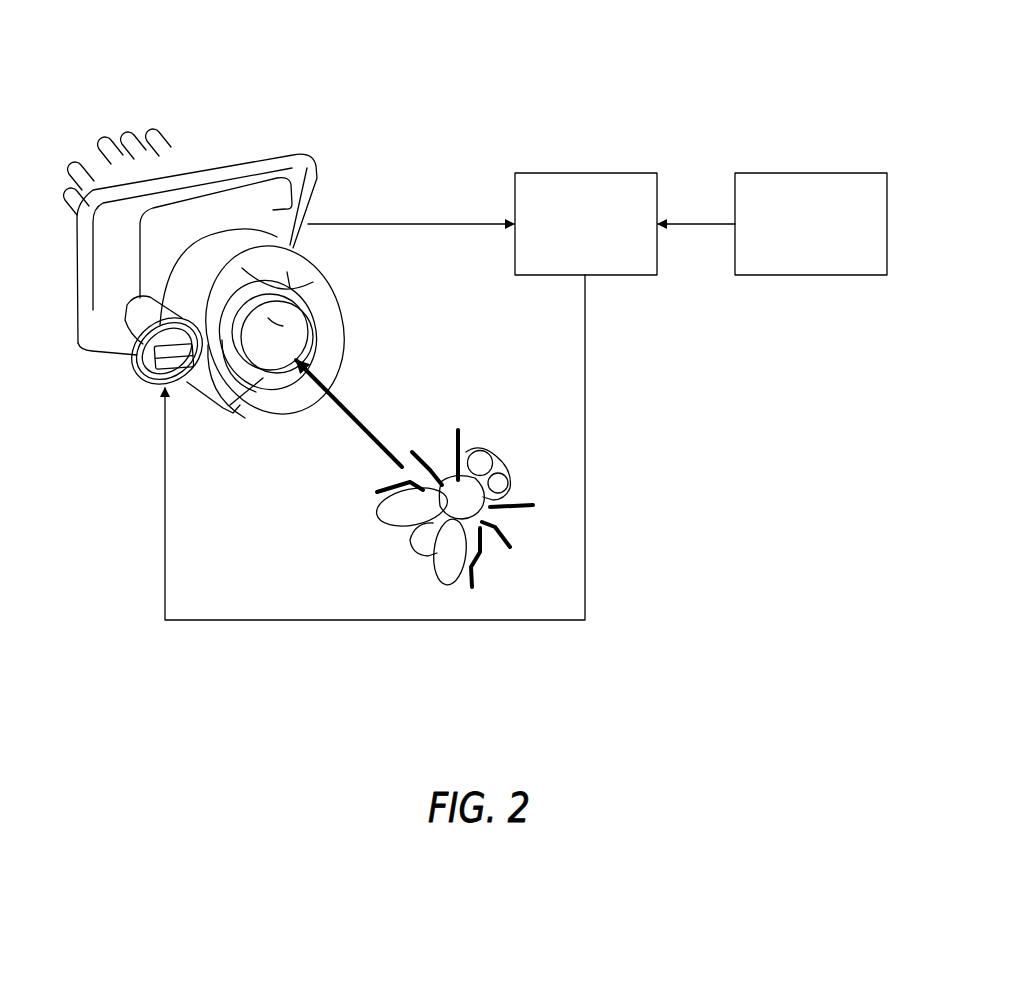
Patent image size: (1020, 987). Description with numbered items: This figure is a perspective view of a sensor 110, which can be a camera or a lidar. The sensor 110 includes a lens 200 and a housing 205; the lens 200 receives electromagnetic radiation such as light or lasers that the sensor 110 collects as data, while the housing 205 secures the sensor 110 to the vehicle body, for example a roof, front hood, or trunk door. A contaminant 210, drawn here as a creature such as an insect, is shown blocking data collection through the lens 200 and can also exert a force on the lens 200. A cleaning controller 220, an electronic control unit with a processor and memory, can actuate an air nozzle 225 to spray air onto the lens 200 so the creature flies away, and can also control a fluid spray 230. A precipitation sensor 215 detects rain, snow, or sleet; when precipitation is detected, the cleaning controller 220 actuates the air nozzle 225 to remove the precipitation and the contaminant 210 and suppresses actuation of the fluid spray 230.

The sensor 110 is at (146, 68).
The housing 205 is at (305, 158).
The lens 200 is at (305, 325).
The fluid spray 230 is at (186, 350).
The air nozzle 225 is at (170, 365).
The contaminant 210 is at (478, 450).
The cleaning controller 220 is at (635, 172).
The precipitation sensor 215 is at (861, 172).